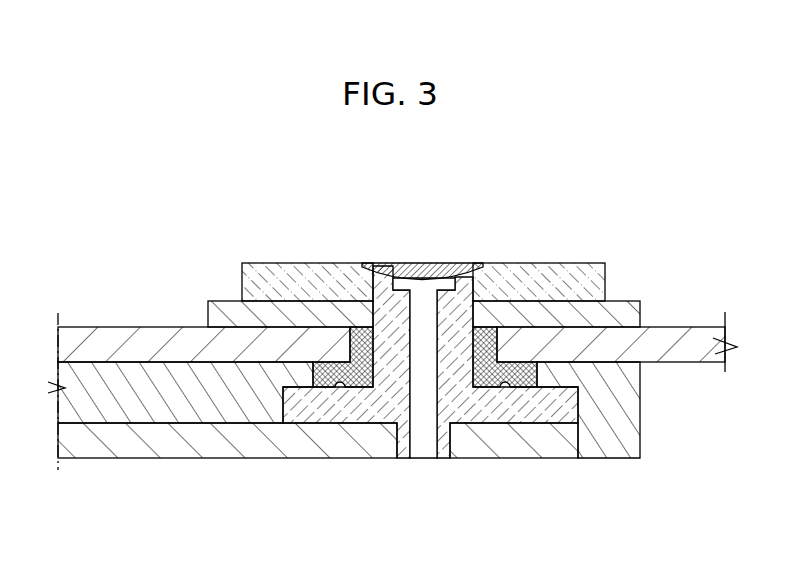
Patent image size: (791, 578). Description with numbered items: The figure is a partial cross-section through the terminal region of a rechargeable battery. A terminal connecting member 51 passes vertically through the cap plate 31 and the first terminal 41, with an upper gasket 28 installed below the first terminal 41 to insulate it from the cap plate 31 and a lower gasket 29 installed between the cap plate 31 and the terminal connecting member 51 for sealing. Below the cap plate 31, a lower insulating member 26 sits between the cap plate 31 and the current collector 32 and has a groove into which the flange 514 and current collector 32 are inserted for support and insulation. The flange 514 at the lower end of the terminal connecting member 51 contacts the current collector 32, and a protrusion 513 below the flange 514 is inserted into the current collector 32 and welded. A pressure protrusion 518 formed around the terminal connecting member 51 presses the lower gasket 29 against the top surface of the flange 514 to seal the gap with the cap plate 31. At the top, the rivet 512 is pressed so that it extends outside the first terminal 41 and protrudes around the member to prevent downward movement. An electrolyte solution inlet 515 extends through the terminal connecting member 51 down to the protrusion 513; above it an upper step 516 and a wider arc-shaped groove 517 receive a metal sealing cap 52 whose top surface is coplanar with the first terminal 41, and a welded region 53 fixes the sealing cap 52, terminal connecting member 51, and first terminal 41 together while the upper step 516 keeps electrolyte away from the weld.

The cap plate 31 is at (105, 347).
The lower insulating member 26 is at (197, 410).
The current collector 32 is at (115, 445).
The upper gasket 28 is at (628, 312).
The first terminal 41 is at (585, 272).
The lower gasket 29 is at (325, 388).
The pressure protrusion 518 is at (505, 392).
The welded region 53 is at (362, 263).
The protrusion 513 is at (398, 432).
The flange 514 is at (565, 413).
The sealing cap 52 is at (417, 265).
The electrolyte solution inlet 515 is at (437, 432).
The terminal connecting member 51 is at (340, 276).
The groove 517 is at (383, 272).
The upper step 516 is at (443, 278).
The rivet 512 is at (483, 265).